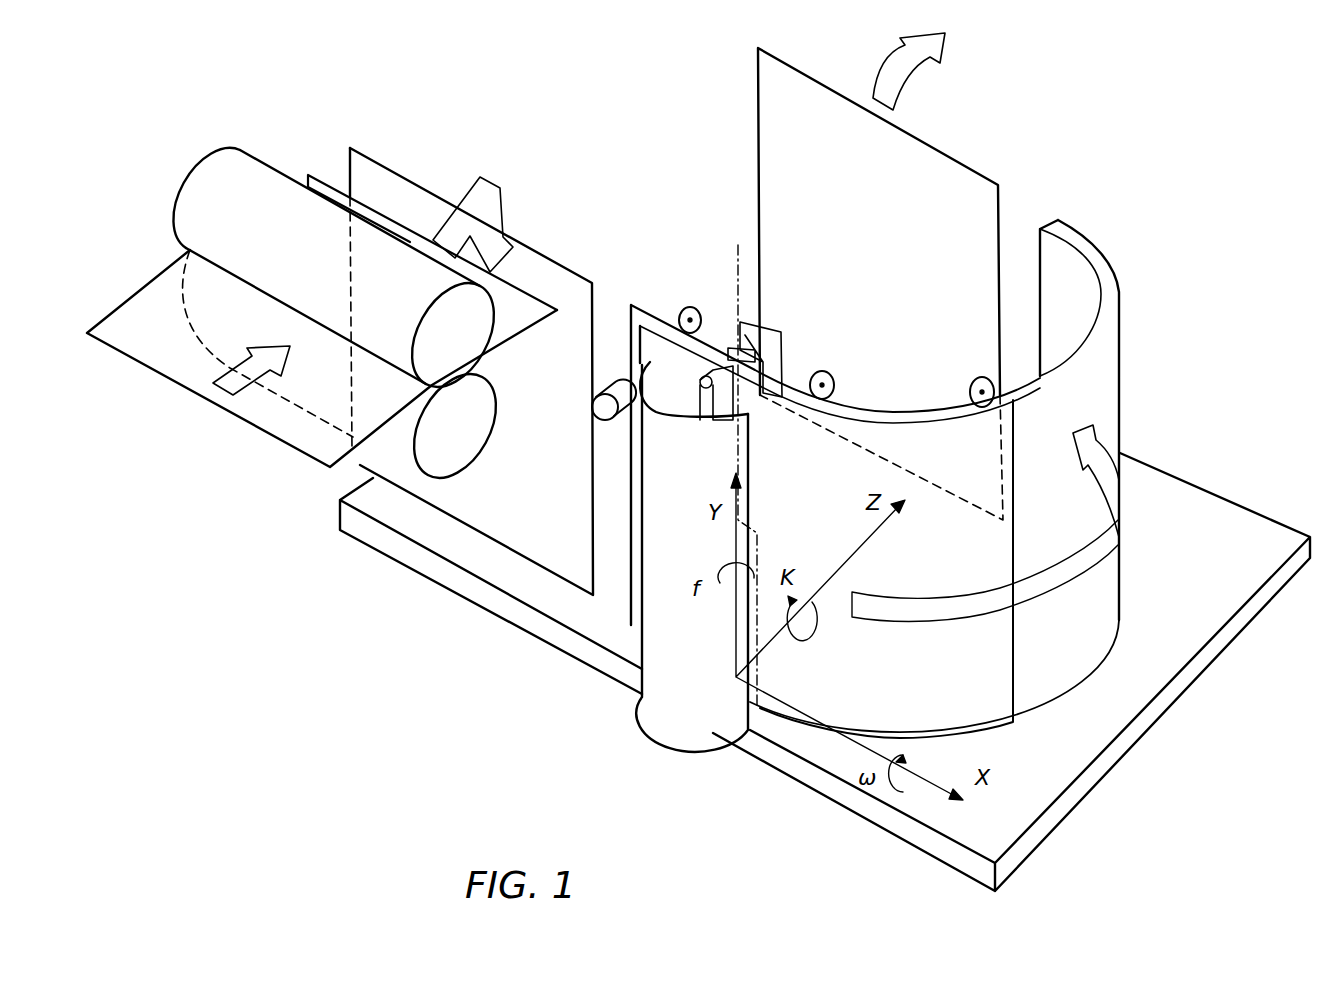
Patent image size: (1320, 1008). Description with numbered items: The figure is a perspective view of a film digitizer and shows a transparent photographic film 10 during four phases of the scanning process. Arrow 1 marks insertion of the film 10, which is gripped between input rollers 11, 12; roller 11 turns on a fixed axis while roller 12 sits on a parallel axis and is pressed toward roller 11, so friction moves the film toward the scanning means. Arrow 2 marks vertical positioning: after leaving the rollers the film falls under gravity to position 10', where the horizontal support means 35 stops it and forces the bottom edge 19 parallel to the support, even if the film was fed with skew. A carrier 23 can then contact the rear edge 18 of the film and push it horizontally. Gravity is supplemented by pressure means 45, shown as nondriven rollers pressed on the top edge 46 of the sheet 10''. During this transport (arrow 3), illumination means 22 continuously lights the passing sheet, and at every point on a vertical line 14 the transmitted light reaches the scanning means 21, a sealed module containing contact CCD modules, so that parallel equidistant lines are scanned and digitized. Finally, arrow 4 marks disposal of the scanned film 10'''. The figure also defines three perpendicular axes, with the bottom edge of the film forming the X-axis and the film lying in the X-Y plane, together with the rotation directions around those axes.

The arrow 1 is at (226, 401).
The arrow 2 is at (477, 202).
The arrow 3 is at (934, 476).
The arrow 4 is at (937, 71).
The film 10 is at (322, 336).
The film 10' is at (471, 371).
The film 10'' is at (886, 569).
The film 10''' is at (880, 284).
The roller 11 is at (470, 450).
The roller 12 is at (472, 337).
The vertical line 14 is at (737, 443).
The rear edge 18 is at (628, 468).
The bottom edge 19 is at (507, 553).
The scanning means 21 is at (760, 327).
The illumination means 22 is at (710, 373).
The carrier 23 is at (598, 406).
The horizontal support means 35 is at (815, 785).
The pressure means 45 is at (683, 310).
The top edge 46 is at (927, 417).